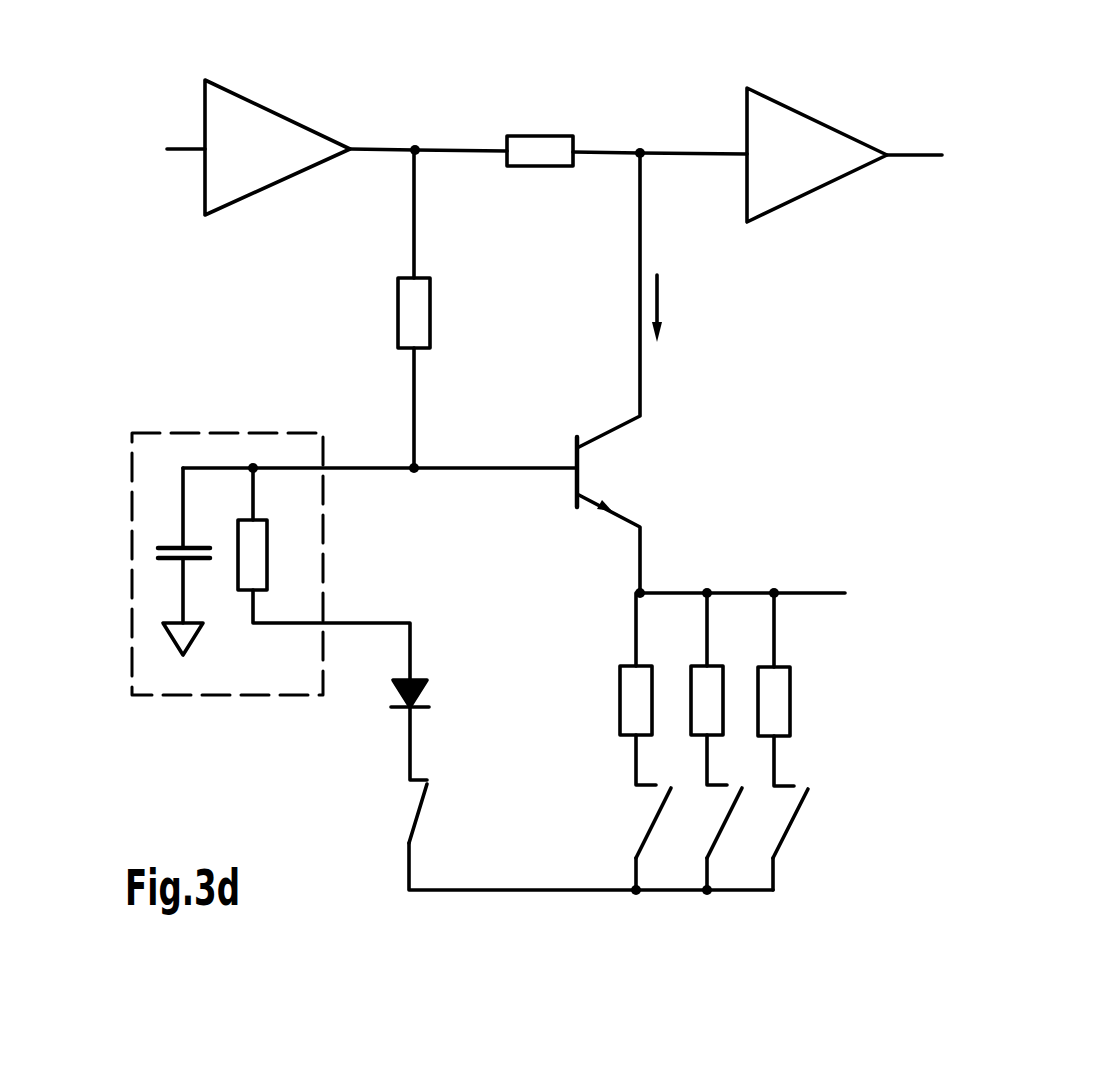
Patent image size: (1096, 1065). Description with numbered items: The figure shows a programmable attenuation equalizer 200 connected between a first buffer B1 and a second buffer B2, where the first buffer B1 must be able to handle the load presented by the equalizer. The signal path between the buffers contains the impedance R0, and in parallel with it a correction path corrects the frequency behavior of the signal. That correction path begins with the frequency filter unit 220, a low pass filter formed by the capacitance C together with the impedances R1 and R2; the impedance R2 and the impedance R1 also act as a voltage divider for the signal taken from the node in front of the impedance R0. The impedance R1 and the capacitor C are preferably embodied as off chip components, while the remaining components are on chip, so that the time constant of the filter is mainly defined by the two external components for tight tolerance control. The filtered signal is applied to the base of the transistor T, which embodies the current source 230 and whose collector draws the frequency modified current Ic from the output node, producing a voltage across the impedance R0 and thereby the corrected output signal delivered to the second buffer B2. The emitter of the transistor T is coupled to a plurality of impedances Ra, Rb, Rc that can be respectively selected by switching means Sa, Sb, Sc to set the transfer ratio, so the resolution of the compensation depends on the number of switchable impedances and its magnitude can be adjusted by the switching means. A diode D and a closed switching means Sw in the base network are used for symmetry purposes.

The attenuation equalizer 200 is at (606, 97).
The frequency filter unit 220 is at (440, 426).
The current source 230 is at (692, 524).
The first buffer B1 is at (258, 133).
The second buffer B2 is at (844, 143).
The impedance R0 is at (540, 175).
The impedance R2 is at (389, 309).
The impedance R1 is at (324, 574).
The capacitance C is at (184, 561).
The transistor T is at (608, 373).
The frequency modified current Ic is at (674, 308).
The diode D is at (425, 697).
The switching means Sw is at (522, 798).
The impedance Ra is at (648, 689).
The impedance Rb is at (718, 689).
The impedance Rc is at (785, 689).
The switching means Sa is at (656, 839).
The switching means Sb is at (727, 839).
The switching means Sc is at (792, 839).